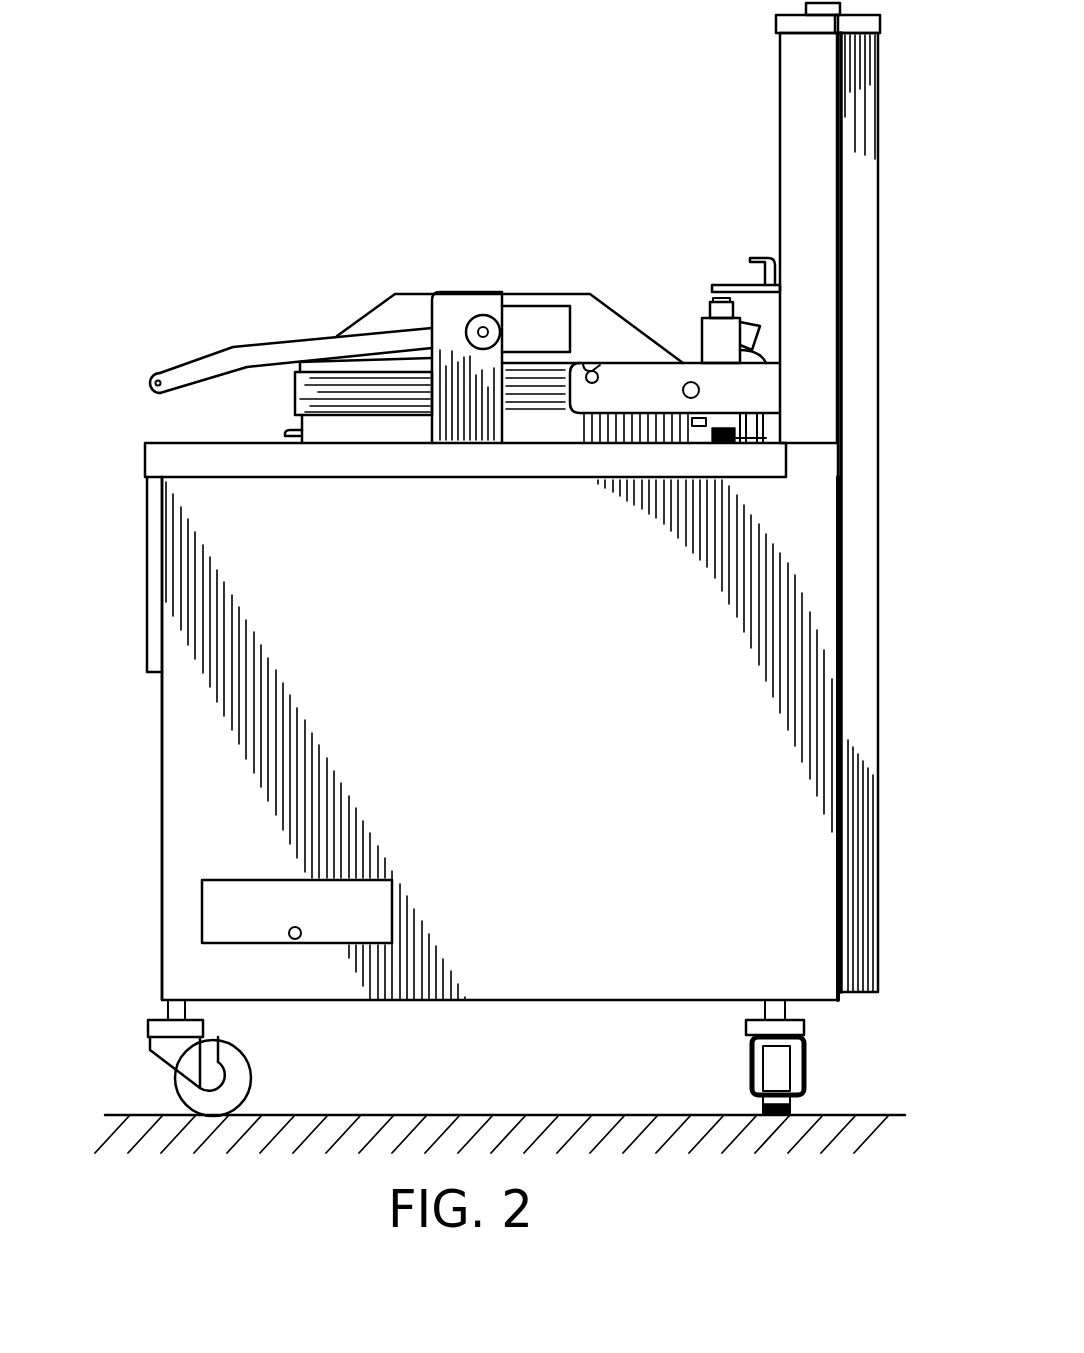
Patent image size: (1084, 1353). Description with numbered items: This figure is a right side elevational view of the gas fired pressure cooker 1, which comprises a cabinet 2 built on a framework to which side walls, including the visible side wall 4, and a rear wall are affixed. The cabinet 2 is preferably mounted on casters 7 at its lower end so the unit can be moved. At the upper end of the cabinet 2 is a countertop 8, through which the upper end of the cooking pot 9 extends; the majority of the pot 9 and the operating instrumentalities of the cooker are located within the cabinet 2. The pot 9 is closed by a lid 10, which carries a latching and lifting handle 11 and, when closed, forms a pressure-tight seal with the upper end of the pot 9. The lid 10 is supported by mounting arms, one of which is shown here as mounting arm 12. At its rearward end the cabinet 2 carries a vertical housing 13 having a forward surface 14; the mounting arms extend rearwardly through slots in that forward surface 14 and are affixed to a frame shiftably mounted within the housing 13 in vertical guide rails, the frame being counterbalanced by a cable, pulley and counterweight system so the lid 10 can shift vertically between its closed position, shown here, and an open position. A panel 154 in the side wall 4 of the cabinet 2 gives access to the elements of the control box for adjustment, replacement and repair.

The pressure cooker 1 is at (152, 835).
The cabinet 2 is at (183, 915).
The side wall 4 is at (504, 707).
The casters 7 is at (233, 1067).
The countertop 8 is at (203, 457).
The cooking pot 9 is at (352, 427).
The lid 10 is at (348, 322).
The latching and lifting handle 11 is at (185, 360).
The mounting arm 12 is at (651, 399).
The vertical housing 13 is at (878, 167).
The forward surface 14 is at (780, 84).
The panel 154 is at (251, 900).